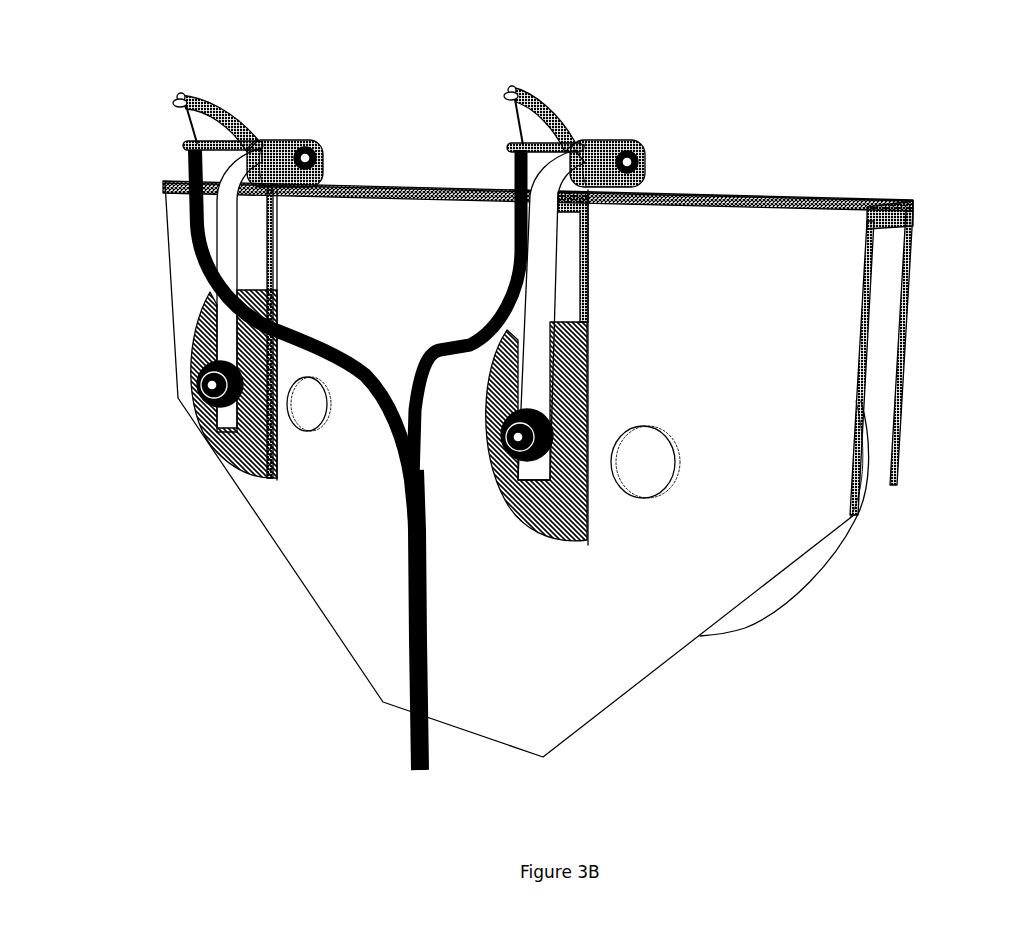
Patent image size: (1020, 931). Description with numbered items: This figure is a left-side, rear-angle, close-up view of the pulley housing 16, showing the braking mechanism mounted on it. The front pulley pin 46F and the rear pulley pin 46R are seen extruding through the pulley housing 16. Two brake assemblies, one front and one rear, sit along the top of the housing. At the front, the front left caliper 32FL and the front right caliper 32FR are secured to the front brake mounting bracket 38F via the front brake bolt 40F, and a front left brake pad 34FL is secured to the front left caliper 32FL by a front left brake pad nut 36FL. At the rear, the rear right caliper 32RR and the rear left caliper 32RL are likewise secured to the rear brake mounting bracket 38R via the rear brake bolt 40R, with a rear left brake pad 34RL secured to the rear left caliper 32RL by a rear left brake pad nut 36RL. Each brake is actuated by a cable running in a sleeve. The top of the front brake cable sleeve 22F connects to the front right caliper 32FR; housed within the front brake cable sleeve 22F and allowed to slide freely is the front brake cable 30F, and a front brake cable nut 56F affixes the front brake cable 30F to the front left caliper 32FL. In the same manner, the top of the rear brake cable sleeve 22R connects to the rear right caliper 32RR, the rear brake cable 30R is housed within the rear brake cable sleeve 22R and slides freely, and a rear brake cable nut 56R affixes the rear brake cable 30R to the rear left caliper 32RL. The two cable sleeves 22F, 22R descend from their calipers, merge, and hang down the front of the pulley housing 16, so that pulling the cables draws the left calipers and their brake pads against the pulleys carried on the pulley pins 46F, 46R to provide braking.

The pulley housing 16 is at (860, 200).
The front brake cable sleeve 22F is at (197, 223).
The rear brake cable sleeve 22R is at (515, 220).
The front brake cable 30F is at (185, 120).
The rear brake cable 30R is at (520, 123).
The front left caliper 32FL is at (212, 103).
The front right caliper 32FR is at (182, 143).
The rear left caliper 32RL is at (547, 113).
The rear right caliper 32RR is at (513, 147).
The front left brake pad 34FL is at (223, 463).
The rear left brake pad 34RL is at (525, 527).
The front left brake pad nut 36FL is at (203, 397).
The rear left brake pad nut 36RL is at (505, 487).
The front brake mounting bracket 38F is at (326, 171).
The rear brake mounting bracket 38R is at (637, 187).
The front brake bolt 40F is at (311, 150).
The rear brake bolt 40R is at (640, 160).
The front pulley pin 46F is at (309, 407).
The rear pulley pin 46R is at (643, 453).
The front brake cable nut 56F is at (178, 96).
The rear brake cable nut 56R is at (513, 88).